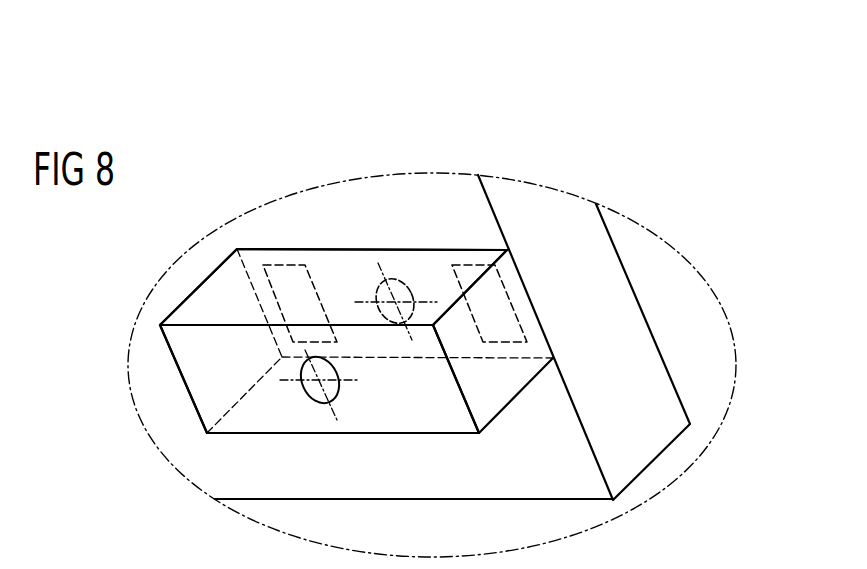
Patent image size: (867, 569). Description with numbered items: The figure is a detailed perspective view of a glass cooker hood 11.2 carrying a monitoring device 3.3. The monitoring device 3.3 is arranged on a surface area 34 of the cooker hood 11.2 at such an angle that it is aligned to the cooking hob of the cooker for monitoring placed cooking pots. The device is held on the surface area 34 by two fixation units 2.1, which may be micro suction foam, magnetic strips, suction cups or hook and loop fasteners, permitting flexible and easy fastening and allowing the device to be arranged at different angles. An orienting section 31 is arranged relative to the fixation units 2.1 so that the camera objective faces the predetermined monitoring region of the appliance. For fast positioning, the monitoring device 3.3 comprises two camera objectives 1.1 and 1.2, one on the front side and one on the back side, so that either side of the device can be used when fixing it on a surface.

The camera objective 1.1 is at (320, 398).
The camera objective 1.2 is at (400, 284).
The fixation unit 2.1 is at (283, 277).
The monitoring device 3.3 is at (198, 383).
The orienting section 31 is at (418, 392).
The surface area 34 is at (347, 290).
The glass cooker hood 11.2 is at (608, 282).